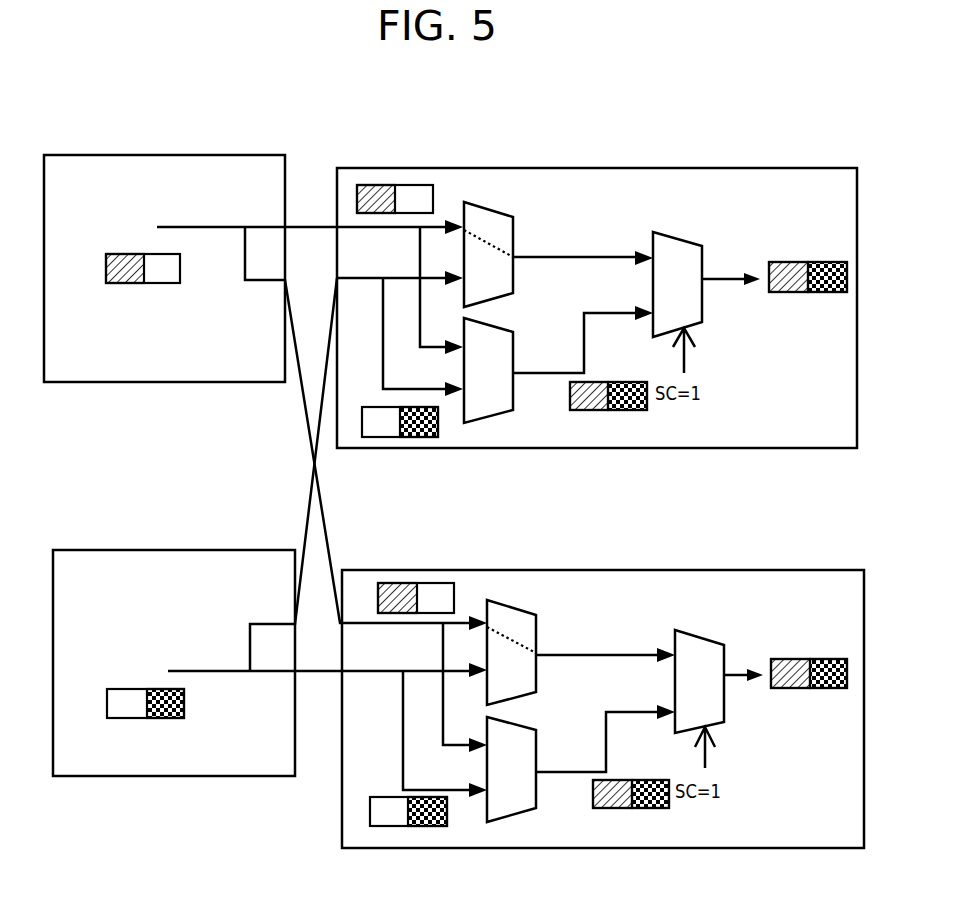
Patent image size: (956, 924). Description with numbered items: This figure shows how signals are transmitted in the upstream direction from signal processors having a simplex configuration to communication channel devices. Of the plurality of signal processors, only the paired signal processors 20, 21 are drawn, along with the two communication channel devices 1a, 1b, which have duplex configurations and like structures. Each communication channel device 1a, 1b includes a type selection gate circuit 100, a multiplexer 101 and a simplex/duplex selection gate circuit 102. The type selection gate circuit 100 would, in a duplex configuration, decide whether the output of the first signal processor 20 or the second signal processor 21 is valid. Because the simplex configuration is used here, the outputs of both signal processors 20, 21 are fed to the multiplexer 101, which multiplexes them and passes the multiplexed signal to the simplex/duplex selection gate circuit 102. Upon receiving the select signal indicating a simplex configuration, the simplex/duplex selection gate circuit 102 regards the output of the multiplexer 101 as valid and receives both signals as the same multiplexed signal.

The #0 signal processor 20 is at (182, 155).
The #1 signal processor 21 is at (173, 550).
The #0 communication channel device 1a is at (668, 168).
The #1 communication channel device 1b is at (635, 570).
The type selection gate circuit 100 is at (498, 213).
The multiplexer 101 is at (497, 415).
The simplex/duplex selection gate circuit 102 is at (702, 322).